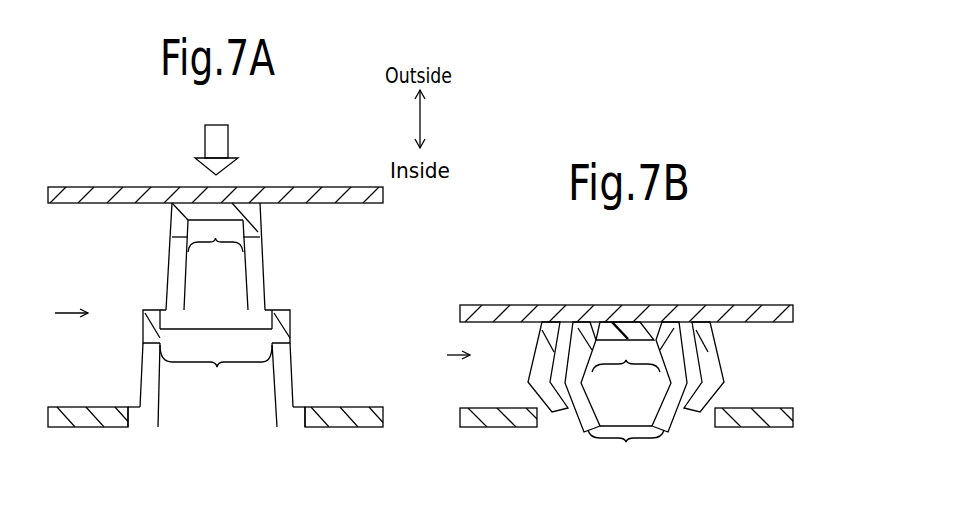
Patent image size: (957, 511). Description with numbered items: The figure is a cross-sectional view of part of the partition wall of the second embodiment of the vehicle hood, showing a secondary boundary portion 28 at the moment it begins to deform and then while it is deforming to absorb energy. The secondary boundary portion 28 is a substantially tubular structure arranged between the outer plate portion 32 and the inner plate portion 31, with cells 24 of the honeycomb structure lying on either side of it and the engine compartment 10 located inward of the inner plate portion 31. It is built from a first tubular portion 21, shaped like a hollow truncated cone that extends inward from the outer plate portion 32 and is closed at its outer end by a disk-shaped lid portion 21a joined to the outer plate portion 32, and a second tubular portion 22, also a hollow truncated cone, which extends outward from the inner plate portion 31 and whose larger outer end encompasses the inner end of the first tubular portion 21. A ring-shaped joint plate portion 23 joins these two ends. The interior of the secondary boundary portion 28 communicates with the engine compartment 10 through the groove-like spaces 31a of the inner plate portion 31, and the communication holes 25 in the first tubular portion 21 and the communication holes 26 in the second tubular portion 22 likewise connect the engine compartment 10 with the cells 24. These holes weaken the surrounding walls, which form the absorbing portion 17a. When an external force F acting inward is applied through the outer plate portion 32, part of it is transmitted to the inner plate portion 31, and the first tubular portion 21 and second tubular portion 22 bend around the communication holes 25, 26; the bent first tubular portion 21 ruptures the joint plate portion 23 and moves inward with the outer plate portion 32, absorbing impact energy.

In FIG. 7A, the engine compartment 10 is at (230, 483).
In FIG. 7B, the engine compartment 10 is at (710, 481).
In FIG. 7A, the absorbing portion 17a is at (290, 333).
In FIG. 7A, the first tubular portion 21 is at (172, 250).
In FIG. 7B, the first tubular portion 21 is at (576, 320).
In FIG. 7A, the lid portion 21a is at (210, 200).
In FIG. 7B, the lid portion 21a is at (624, 322).
In FIG. 7A, the second tubular portion 22 is at (140, 335).
In FIG. 7B, the second tubular portion 22 is at (532, 398).
In FIG. 7A, the joint plate portion 23 is at (150, 318).
In FIG. 7B, the joint plate portion 23 is at (626, 453).
In FIG. 7A, the cell 24 is at (95, 251).
In FIG. 7B, the cell 24 is at (490, 398).
In FIG. 7A, the communication hole 25 is at (215, 264).
In FIG. 7B, the communication hole 25 is at (626, 393).
In FIG. 7A, the communication hole 26 is at (216, 365).
In FIG. 7B, the communication hole 26 is at (542, 356).
In FIG. 7A, the secondary boundary portion 28 is at (54, 313).
In FIG. 7B, the secondary boundary portion 28 is at (440, 356).
In FIG. 7A, the inner plate portion 31 is at (345, 420).
In FIG. 7B, the inner plate portion 31 is at (757, 420).
In FIG. 7A, the space 31a is at (280, 418).
In FIG. 7A, the outer plate portion 32 is at (304, 190).
In FIG. 7B, the outer plate portion 32 is at (742, 305).
In FIG. 7A, the external force F is at (232, 136).